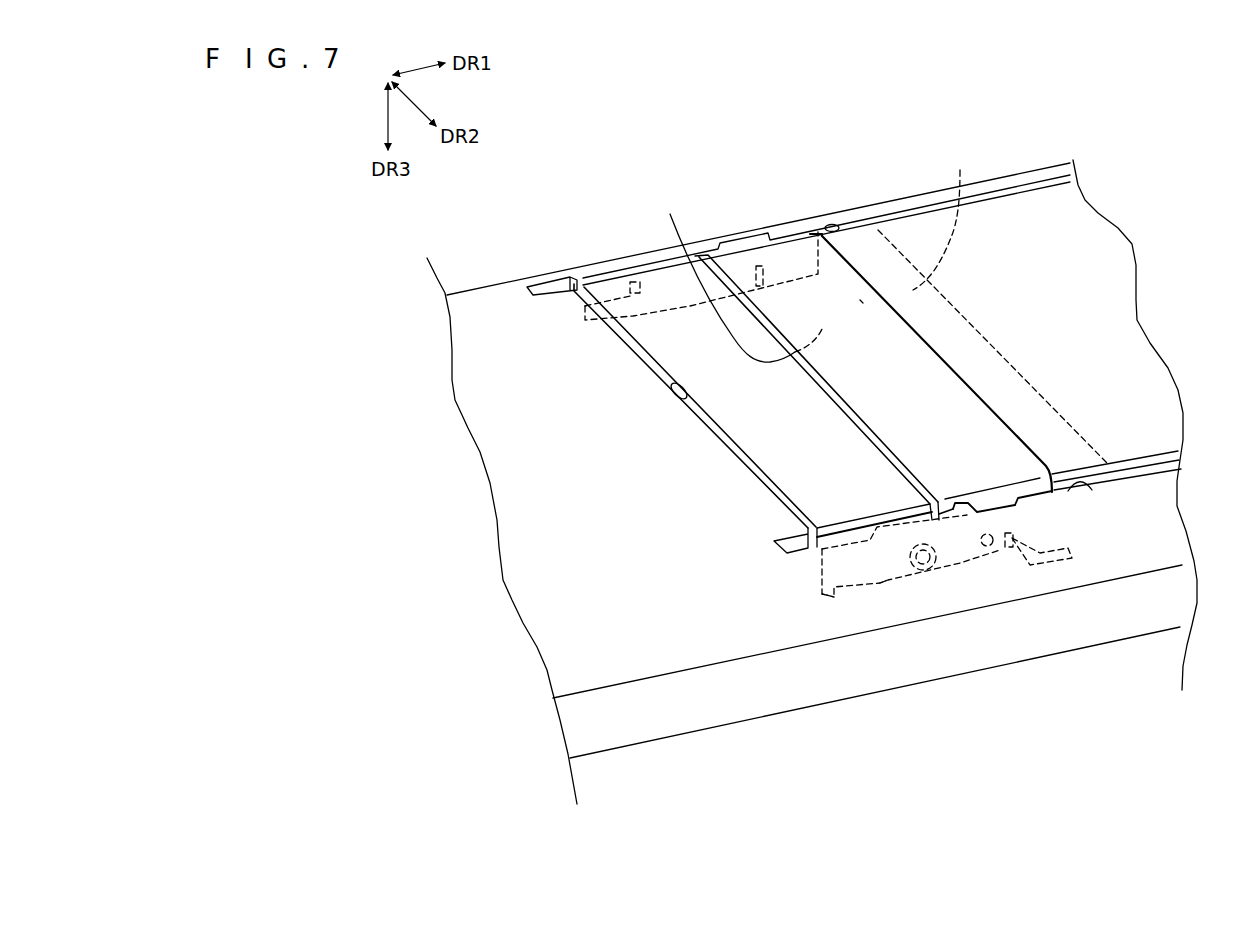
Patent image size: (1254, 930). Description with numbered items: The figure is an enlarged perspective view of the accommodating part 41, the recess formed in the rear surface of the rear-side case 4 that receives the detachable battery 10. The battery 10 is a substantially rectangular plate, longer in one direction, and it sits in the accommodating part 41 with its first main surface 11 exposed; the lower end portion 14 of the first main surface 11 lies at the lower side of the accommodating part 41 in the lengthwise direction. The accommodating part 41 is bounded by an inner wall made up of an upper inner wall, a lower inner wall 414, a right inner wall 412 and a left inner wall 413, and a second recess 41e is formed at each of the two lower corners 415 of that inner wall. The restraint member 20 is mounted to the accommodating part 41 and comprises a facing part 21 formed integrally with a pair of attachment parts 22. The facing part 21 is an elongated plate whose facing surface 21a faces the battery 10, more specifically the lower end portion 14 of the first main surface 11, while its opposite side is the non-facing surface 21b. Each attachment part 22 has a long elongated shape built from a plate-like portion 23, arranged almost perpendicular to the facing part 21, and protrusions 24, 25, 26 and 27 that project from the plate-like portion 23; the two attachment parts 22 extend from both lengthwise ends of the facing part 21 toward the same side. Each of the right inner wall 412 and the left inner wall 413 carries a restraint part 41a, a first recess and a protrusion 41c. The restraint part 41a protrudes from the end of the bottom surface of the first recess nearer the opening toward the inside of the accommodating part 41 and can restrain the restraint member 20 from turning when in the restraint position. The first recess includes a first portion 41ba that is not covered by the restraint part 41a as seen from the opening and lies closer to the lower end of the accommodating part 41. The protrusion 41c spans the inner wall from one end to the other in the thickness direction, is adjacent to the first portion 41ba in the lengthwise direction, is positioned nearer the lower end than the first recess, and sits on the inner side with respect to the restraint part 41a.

The rear-side case 4 is at (628, 655).
The battery 10 is at (1075, 228).
The first main surface 11 is at (1067, 200).
The lower end portion 14 is at (943, 218).
The restraint member 20 is at (863, 303).
The facing part 21 is at (853, 287).
The facing surface 21a is at (735, 278).
The non-facing surface 21b is at (843, 270).
The attachment part 22 is at (962, 545).
The plate-like portion 23 is at (888, 584).
The protrusion 24 is at (1050, 568).
The protrusion 25 is at (988, 548).
The protrusion 26 is at (923, 570).
The protrusion 27 is at (824, 597).
The accommodating part 41 is at (1037, 180).
The restraint part 41a is at (1060, 488).
The first portion 41ba is at (1016, 500).
The protrusion 41c is at (975, 512).
The second recess 41e is at (797, 552).
The right inner wall 412 is at (1127, 475).
The left inner wall 413 is at (833, 223).
The lower inner wall 414 is at (690, 399).
The lower corners 415 is at (550, 282).